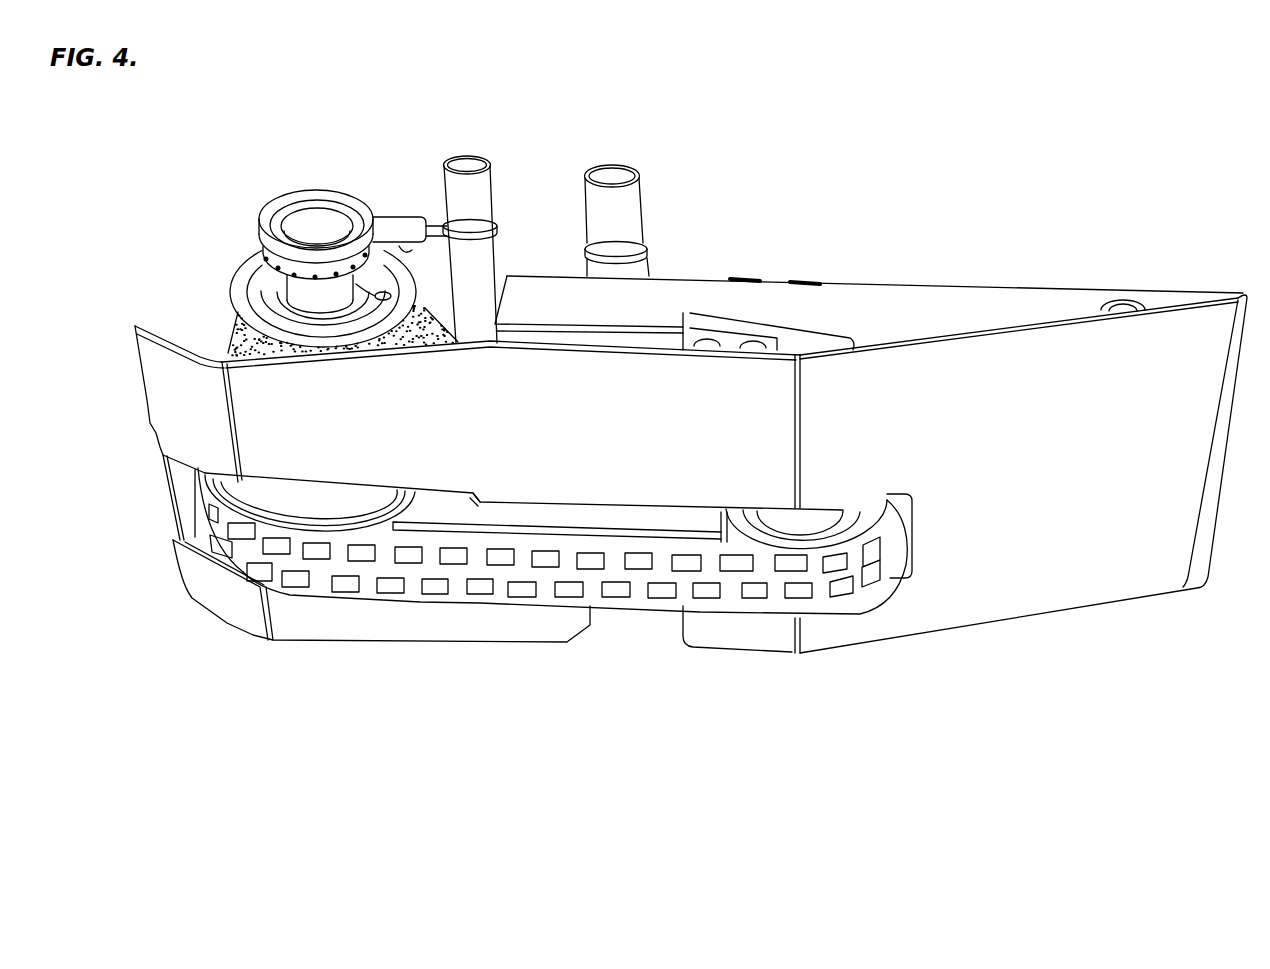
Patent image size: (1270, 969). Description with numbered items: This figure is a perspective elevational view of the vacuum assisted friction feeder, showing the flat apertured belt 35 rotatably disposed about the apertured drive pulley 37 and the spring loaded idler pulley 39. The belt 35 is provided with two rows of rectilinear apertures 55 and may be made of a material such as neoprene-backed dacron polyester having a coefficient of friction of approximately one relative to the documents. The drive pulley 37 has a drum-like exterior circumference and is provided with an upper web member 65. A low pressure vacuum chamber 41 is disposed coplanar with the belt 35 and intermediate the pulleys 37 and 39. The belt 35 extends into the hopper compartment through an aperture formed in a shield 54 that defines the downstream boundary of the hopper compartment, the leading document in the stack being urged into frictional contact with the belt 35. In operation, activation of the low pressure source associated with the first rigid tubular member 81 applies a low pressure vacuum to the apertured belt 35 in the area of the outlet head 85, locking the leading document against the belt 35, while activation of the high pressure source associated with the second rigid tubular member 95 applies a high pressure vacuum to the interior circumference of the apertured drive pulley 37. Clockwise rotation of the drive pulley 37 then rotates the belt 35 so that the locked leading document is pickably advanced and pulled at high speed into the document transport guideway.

The second rigid tubular member 95 is at (470, 163).
The first rigid tubular member 81 is at (610, 178).
The apertured drive pulley 37 is at (314, 509).
The upper web member 65 is at (357, 503).
The spring loaded idler pulley 39 is at (809, 533).
The shield 54 is at (1060, 471).
The low pressure vacuum chamber 41 is at (471, 507).
The flat apertured belt 35 is at (594, 600).
The outlet head 85 is at (637, 520).
The rectilinear apertures 55 is at (710, 598).